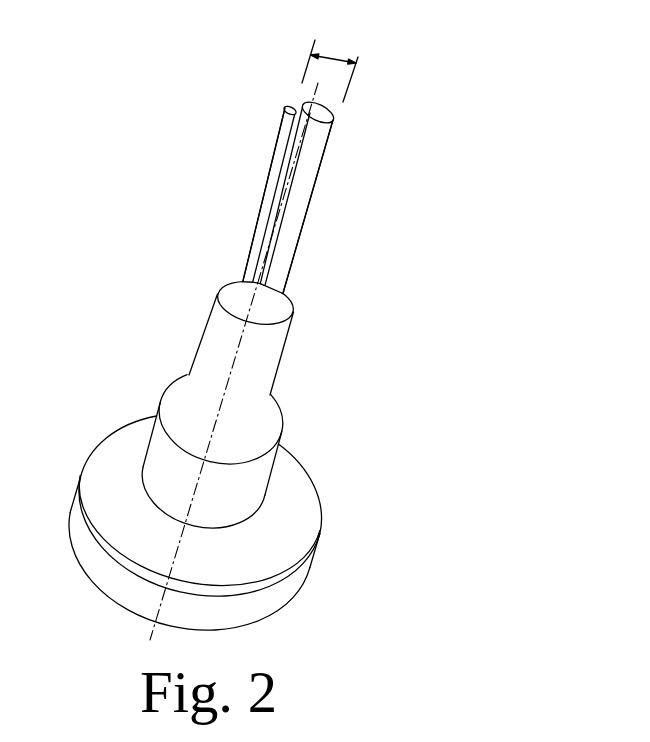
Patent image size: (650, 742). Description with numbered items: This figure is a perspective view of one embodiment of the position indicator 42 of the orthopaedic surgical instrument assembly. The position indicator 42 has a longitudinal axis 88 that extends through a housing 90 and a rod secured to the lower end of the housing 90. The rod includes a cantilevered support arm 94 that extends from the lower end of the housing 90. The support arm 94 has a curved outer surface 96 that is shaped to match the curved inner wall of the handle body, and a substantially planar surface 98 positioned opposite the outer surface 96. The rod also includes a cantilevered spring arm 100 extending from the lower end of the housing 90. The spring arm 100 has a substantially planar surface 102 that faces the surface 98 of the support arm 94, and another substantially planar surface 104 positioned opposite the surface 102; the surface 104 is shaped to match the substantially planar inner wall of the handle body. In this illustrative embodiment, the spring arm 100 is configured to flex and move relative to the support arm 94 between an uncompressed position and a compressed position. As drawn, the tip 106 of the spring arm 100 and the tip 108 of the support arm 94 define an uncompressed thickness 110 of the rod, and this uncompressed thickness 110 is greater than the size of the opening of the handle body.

The position indicator 42 is at (447, 313).
The longitudinal axis 88 is at (233, 350).
The housing 90 is at (273, 428).
The cantilevered support arm 94 is at (329, 196).
The curved outer surface 96 is at (327, 143).
The substantially planar surface 98 is at (302, 165).
The cantilevered spring arm 100 is at (241, 189).
The substantially planar surface 102 is at (290, 192).
The substantially planar surface 104 is at (257, 228).
The tip of the spring arm 106 is at (292, 107).
The tip of the support arm 108 is at (324, 113).
The uncompressed thickness 110 is at (330, 58).